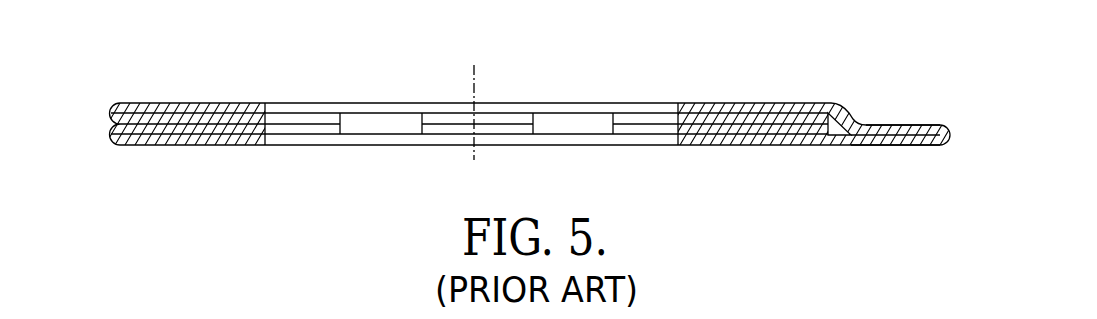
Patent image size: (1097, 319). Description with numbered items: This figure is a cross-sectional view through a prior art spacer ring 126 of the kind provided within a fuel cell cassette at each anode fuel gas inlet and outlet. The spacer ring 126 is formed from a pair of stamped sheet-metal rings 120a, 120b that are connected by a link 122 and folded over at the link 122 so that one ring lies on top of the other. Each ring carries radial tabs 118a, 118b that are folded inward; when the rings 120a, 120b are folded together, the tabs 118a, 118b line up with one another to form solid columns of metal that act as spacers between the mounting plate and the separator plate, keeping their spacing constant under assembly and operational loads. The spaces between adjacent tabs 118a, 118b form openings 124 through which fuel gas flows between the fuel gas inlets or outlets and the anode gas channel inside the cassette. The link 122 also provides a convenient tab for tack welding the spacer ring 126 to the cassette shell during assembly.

The ring 120a is at (150, 102).
The radial tab 118a is at (233, 120).
The radial tab 118b is at (253, 128).
The ring 120b is at (148, 138).
The opening 124 is at (385, 120).
The link 122 is at (890, 126).
The prior art spacer ring 126 is at (809, 72).